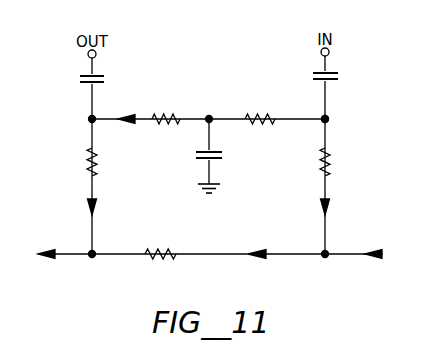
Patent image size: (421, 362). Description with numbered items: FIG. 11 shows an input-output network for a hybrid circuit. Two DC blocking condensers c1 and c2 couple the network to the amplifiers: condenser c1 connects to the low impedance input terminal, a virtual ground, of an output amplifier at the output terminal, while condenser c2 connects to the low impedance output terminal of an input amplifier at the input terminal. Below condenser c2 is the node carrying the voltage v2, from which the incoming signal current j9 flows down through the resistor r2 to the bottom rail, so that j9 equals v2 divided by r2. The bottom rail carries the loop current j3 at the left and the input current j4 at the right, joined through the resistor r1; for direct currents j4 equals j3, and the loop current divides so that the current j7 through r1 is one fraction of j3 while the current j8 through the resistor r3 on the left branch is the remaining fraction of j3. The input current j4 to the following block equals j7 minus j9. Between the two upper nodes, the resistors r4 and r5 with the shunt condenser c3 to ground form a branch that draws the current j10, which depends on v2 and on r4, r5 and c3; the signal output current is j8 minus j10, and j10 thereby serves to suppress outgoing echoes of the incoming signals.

The DC blocking condenser c1 is at (103, 80).
The DC blocking condenser c2 is at (310, 77).
The condenser c3 is at (221, 161).
The resistor r1 is at (160, 265).
The resistor r2 is at (337, 162).
The resistor r3 is at (76, 162).
The resistor r4 is at (166, 107).
The resistor r5 is at (260, 106).
The voltage v2 is at (338, 121).
The loop current j3 is at (46, 268).
The input current j4 is at (373, 268).
The current j7 is at (255, 268).
The current j8 is at (101, 210).
The incoming signal current j9 is at (312, 209).
The echo suppressing current j10 is at (128, 133).